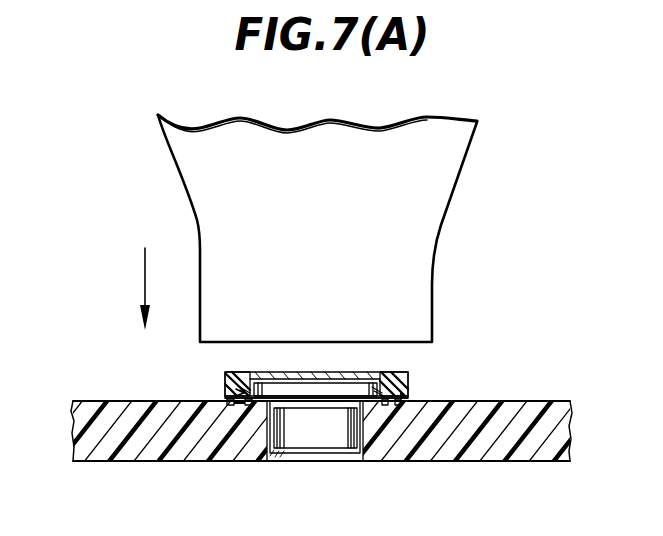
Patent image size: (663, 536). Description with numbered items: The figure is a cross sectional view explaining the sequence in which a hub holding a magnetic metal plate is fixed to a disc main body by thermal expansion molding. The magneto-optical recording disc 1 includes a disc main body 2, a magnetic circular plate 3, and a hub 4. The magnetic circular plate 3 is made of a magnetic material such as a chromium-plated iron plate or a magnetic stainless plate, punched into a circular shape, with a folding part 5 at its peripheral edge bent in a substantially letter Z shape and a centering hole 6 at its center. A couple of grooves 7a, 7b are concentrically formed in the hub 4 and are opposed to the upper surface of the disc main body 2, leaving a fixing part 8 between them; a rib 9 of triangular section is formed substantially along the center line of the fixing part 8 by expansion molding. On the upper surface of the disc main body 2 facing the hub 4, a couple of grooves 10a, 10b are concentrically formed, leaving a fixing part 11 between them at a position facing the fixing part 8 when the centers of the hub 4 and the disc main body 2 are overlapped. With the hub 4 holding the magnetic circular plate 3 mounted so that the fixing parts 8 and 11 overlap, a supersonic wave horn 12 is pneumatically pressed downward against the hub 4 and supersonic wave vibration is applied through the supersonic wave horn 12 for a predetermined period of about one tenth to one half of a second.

The magneto-optical recording disc 1 is at (90, 343).
The disc main body 2 is at (125, 400).
The magnetic circular plate 3 is at (287, 383).
The hub 4 is at (252, 378).
The folding part 5 is at (244, 393).
The centering hole 6 is at (324, 390).
The groove 7a is at (409, 398).
The groove 7b is at (382, 392).
The fixing part 8 is at (226, 398).
The rib 9 is at (234, 405).
The groove 10a is at (398, 405).
The groove 10b is at (384, 405).
The fixing part 11 is at (249, 405).
The supersonic wave horn 12 is at (443, 217).